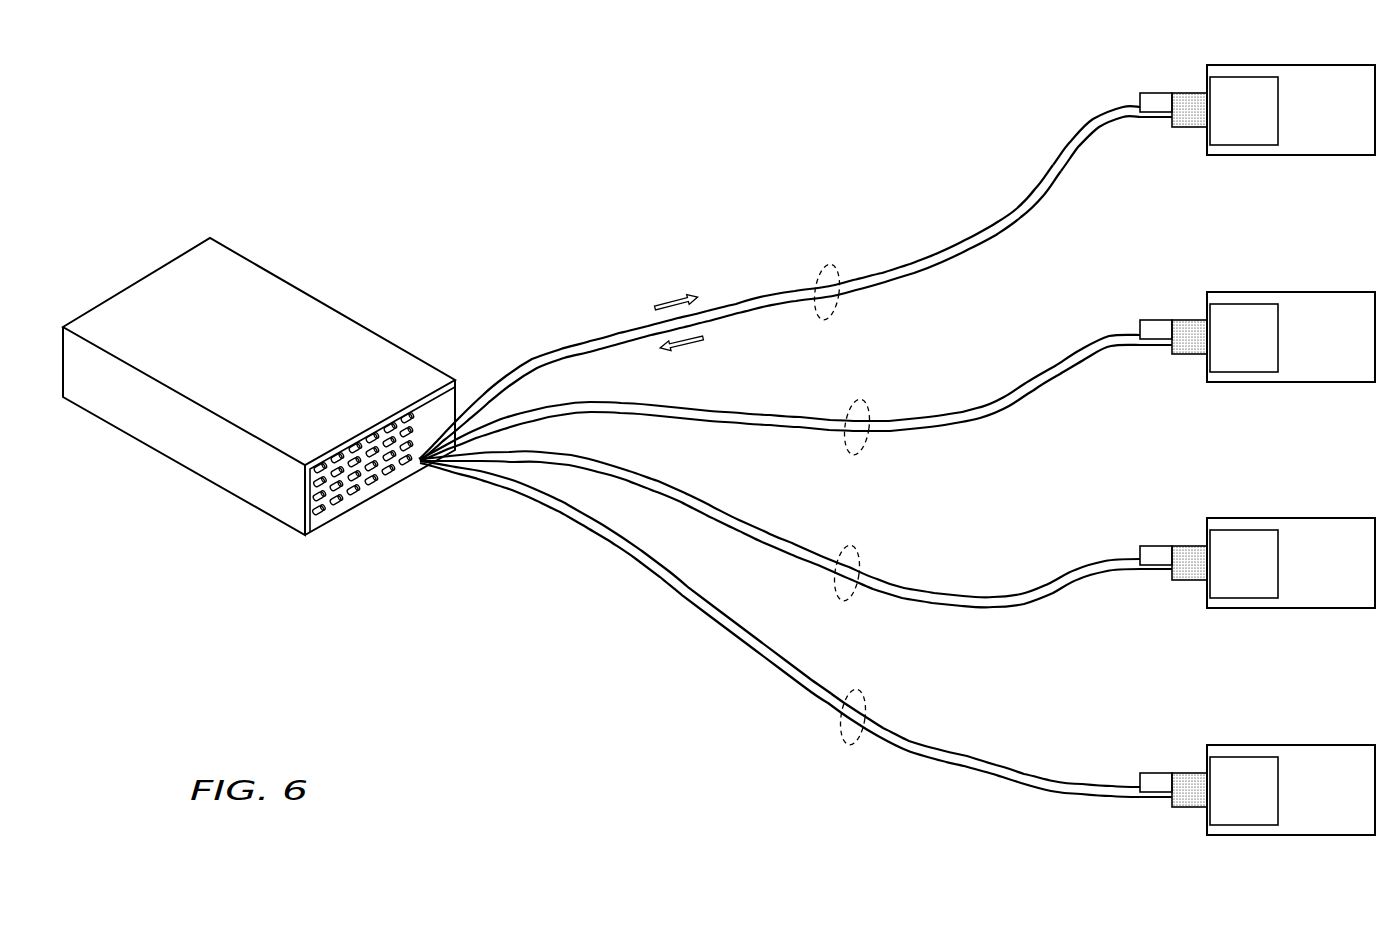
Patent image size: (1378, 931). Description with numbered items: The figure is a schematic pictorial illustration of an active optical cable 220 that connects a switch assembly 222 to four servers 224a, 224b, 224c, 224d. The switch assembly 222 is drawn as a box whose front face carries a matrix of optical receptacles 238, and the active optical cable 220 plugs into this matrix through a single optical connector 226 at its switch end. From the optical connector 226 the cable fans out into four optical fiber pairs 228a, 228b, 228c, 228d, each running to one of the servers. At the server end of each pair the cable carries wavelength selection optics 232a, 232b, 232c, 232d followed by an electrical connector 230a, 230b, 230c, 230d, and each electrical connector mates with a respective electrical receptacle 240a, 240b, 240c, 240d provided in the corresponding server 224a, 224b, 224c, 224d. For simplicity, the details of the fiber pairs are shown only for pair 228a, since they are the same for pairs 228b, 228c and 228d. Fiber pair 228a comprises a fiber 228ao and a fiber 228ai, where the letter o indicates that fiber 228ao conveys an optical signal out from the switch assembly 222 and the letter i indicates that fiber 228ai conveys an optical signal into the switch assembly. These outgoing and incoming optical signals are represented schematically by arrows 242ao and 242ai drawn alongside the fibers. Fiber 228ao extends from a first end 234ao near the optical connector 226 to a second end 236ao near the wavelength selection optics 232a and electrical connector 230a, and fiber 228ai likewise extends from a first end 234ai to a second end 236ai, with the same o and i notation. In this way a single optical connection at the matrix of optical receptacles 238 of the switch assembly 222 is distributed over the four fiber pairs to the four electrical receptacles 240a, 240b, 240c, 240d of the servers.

The active optical cable 220 is at (520, 665).
The switch assembly 222 is at (368, 330).
The server 224a is at (1343, 123).
The server 224b is at (1343, 350).
The server 224c is at (1343, 576).
The server 224d is at (1343, 803).
The optical connector 226 is at (405, 477).
The optical fiber pair 228a is at (822, 263).
The optical fiber pair 228b is at (852, 403).
The optical fiber pair 228c is at (847, 553).
The optical fiber pair 228d is at (857, 743).
The fiber 228ao is at (988, 220).
The fiber 228ai is at (1010, 225).
The electrical connector 230a is at (1177, 130).
The electrical connector 230b is at (1177, 357).
The electrical connector 230c is at (1177, 583).
The electrical connector 230d is at (1177, 810).
The wavelength selection optics 232a is at (1158, 93).
The wavelength selection optics 232b is at (1158, 320).
The wavelength selection optics 232c is at (1158, 546).
The wavelength selection optics 232d is at (1158, 773).
The first end 234ao is at (517, 367).
The first end 234ai is at (605, 343).
The second end 236ao is at (1113, 107).
The second end 236ai is at (1112, 127).
The matrix of optical receptacles 238 is at (340, 510).
The electrical receptacle 240a is at (1268, 123).
The electrical receptacle 240b is at (1268, 350).
The electrical receptacle 240c is at (1268, 576).
The electrical receptacle 240d is at (1268, 803).
The arrow 242ao is at (667, 300).
The arrow 242ai is at (683, 348).